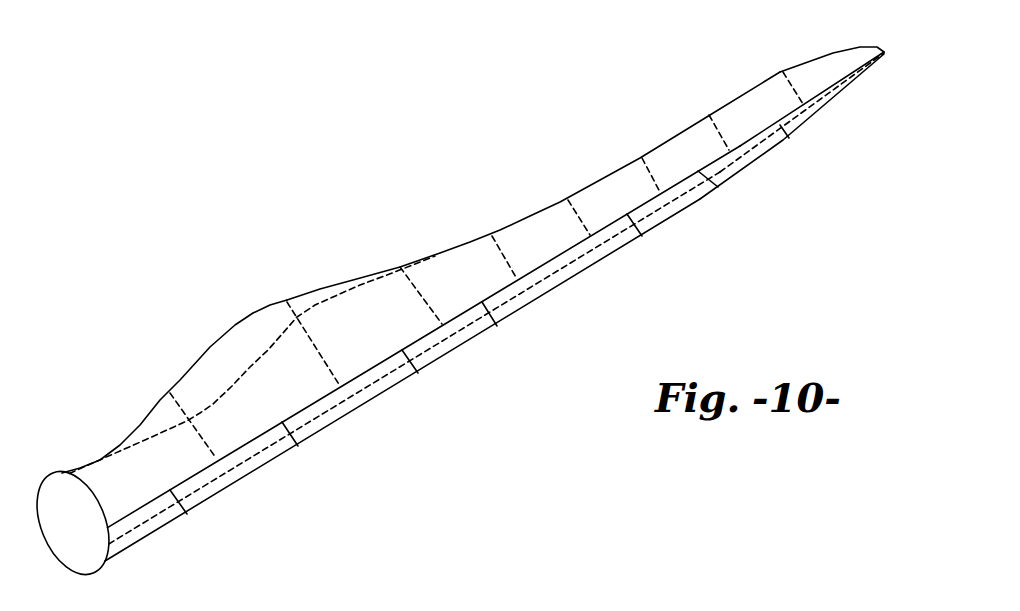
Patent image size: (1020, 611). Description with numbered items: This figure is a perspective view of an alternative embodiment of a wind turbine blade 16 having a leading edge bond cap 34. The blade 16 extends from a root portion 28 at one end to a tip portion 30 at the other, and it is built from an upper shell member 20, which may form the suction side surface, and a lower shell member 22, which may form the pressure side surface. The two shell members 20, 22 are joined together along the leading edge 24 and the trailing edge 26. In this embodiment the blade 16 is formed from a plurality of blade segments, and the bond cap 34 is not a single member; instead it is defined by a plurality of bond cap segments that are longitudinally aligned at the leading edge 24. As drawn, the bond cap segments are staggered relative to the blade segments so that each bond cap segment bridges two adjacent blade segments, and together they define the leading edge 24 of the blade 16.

The wind turbine blade 16 is at (422, 137).
The upper shell member 20 is at (263, 388).
The lower shell member 22 is at (352, 370).
The leading edge 24 is at (568, 278).
The trailing edge 26 is at (593, 186).
The root portion 28 is at (118, 477).
The tip portion 30 is at (857, 55).
The bond cap 34 is at (507, 315).